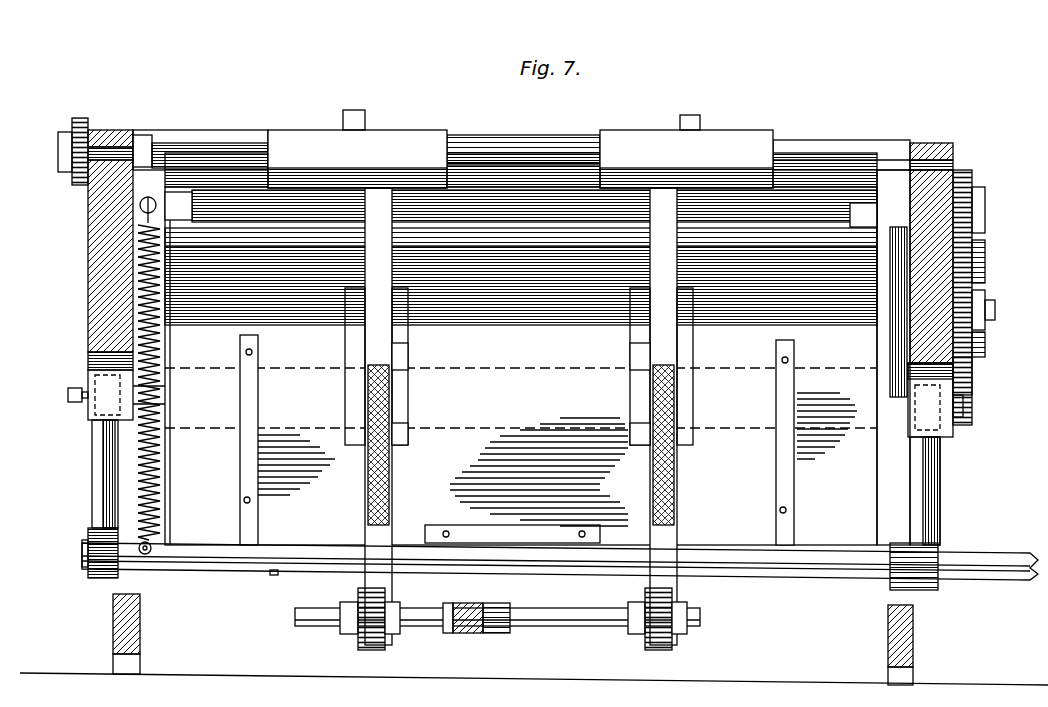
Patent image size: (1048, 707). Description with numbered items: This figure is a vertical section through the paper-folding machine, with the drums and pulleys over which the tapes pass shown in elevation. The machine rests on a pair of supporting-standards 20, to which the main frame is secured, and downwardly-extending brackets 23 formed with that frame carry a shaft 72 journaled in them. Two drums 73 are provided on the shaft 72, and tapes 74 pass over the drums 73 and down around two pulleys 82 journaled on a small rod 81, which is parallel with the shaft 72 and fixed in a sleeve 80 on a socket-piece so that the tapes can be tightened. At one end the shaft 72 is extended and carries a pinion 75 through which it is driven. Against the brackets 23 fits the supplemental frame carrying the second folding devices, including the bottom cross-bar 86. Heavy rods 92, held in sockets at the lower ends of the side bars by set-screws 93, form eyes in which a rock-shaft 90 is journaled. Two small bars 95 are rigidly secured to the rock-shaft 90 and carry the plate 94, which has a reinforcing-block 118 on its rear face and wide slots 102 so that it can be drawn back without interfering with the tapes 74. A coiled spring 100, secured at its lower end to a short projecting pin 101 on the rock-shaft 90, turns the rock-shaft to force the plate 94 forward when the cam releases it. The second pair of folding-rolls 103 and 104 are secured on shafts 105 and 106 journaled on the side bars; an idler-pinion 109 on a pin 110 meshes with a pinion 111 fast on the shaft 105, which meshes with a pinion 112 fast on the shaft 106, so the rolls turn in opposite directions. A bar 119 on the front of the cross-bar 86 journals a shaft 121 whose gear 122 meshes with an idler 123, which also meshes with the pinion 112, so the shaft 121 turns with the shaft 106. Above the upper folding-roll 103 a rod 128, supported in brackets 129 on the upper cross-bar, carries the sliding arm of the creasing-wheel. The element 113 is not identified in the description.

The supporting-standards 20 is at (141, 640).
The downwardly-extending brackets 23 is at (110, 232).
The shaft 72 is at (215, 152).
The drums 73 is at (432, 142).
The tapes 74 is at (392, 254).
The pinion 75 is at (85, 120).
The sleeve 80 is at (492, 616).
The small rod 81 is at (582, 626).
The pulleys 82 is at (372, 612).
The bottom cross-bar 86 is at (398, 418).
The rock-shaft 90 is at (240, 557).
The heavy rods 92 is at (98, 484).
The set-screws 93 is at (70, 398).
The plate 94 is at (735, 533).
The small bars 95 is at (258, 540).
The coiled spring 100 is at (155, 347).
The projecting pin 101 is at (148, 544).
The wide slots 102 is at (393, 443).
The folding-roll 103 is at (555, 250).
The folding-roll 104 is at (348, 402).
The shaft 105 is at (980, 270).
The shaft 106 is at (980, 322).
The idler-pinion 109 is at (958, 175).
The pin 110 is at (980, 195).
The pinion 111 is at (968, 260).
The pinion 112 is at (970, 305).
The set knobs 113 is at (400, 99).
The reinforcing-block 118 is at (448, 530).
The bar 119 is at (402, 372).
The shaft 121 is at (980, 358).
The gear 122 is at (968, 395).
The idler 123 is at (990, 322).
The rod 128 is at (520, 215).
The brackets 129 is at (183, 207).